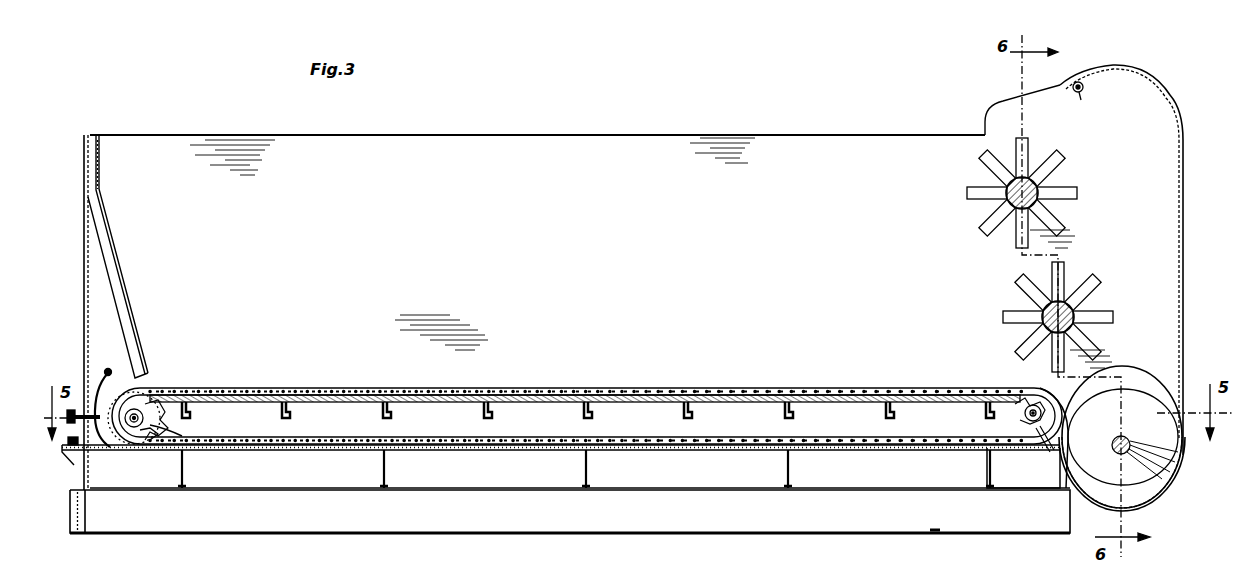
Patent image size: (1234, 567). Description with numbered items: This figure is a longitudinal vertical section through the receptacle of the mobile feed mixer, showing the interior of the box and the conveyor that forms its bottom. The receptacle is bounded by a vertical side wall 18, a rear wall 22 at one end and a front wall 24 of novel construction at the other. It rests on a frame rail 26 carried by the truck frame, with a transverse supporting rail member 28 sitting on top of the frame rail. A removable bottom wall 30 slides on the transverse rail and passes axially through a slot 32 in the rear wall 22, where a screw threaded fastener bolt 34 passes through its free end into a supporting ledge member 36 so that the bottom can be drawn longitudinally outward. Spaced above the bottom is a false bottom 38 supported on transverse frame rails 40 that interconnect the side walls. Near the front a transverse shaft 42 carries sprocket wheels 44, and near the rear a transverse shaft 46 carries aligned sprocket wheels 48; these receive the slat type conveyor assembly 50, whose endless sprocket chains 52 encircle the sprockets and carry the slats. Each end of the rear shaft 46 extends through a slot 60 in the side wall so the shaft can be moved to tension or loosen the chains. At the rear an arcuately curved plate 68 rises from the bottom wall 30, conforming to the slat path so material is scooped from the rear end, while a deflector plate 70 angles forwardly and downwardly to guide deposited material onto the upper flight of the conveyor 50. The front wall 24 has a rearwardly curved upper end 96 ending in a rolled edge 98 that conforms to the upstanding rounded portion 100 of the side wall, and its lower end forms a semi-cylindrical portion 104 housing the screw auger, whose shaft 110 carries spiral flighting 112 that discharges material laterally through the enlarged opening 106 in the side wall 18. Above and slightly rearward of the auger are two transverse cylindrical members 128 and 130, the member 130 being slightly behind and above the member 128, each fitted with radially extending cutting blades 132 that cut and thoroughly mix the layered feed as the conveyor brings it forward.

The side wall 18 is at (778, 138).
The rear wall 22 is at (84, 286).
The front wall 24 is at (1185, 250).
The frame rail 26 is at (990, 515).
The transverse supporting rail member 28 is at (380, 466).
The bottom wall 30 is at (550, 453).
The slot 32 is at (88, 452).
The screw threaded fastener bolt 34 is at (74, 456).
The supporting ledge member 36 is at (82, 475).
The false bottom 38 is at (870, 401).
The transverse frame rail 40 is at (775, 410).
The transverse shaft 42 is at (1031, 425).
The sprocket wheel 44 is at (1012, 413).
The transverse shaft 46 is at (140, 412).
The sprocket wheel 48 is at (150, 412).
The slat type conveyor assembly 50 is at (750, 380).
The endless sprocket chain 52 is at (618, 388).
The slot 60 is at (184, 436).
The arcuately curved plate 68 is at (92, 388).
The deflector plate 70 is at (116, 256).
The rearwardly curved upper end 96 is at (1143, 80).
The rolled edge 98 is at (1080, 93).
The upstanding rounded portion 100 is at (1050, 90).
The semi-cylindrical portion 104 is at (1145, 506).
The enlarged opening 106 is at (1138, 371).
The shaft 110 is at (1118, 454).
The spiral flighting 112 is at (1170, 437).
The cylindrical member 128 is at (1083, 307).
The cylindrical member 130 is at (1060, 203).
The cutting blade 132 is at (1083, 282).